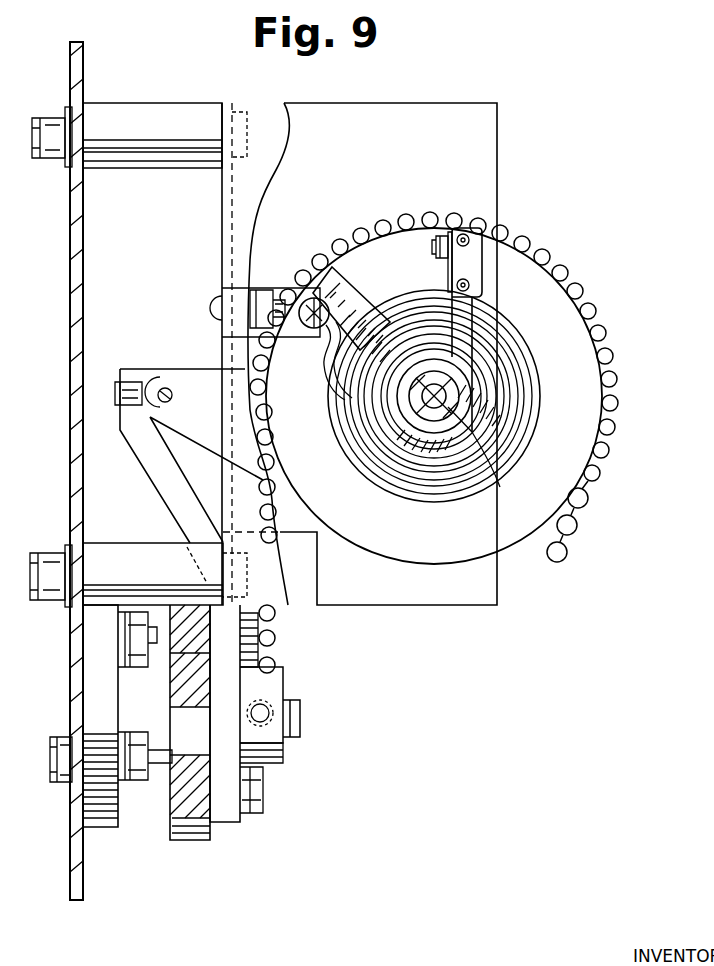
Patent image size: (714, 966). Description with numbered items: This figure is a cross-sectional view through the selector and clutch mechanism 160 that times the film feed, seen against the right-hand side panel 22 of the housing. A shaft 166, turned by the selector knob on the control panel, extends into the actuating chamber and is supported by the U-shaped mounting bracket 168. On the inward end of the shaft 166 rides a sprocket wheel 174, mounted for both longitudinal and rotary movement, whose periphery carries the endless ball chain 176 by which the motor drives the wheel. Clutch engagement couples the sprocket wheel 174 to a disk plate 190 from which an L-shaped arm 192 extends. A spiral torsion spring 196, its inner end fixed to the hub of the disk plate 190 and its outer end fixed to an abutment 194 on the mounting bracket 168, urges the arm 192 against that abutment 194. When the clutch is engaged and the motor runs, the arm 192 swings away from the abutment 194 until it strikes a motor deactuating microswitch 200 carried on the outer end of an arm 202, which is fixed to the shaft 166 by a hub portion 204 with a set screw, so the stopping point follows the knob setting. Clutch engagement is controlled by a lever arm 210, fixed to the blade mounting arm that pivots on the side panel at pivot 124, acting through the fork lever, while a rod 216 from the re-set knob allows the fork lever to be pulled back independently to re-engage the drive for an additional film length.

The right-hand side panel 22 is at (76, 252).
The pivot 124 is at (291, 722).
The mechanism 160 is at (553, 216).
The shaft 166 is at (442, 395).
The U-shaped mounting bracket 168 is at (352, 112).
The sprocket wheel 174 is at (582, 438).
The endless ball chain 176 is at (276, 640).
The disk plate 190 is at (377, 390).
The L-shaped arm 192 is at (343, 304).
The abutment 194 is at (306, 318).
The spiral torsion spring 196 is at (510, 345).
The motor deactuating microswitch 200 is at (453, 228).
The arm 202 is at (470, 307).
The hub portion 204 is at (494, 454).
The lever arm 210 is at (160, 480).
The rod 216 is at (168, 388).